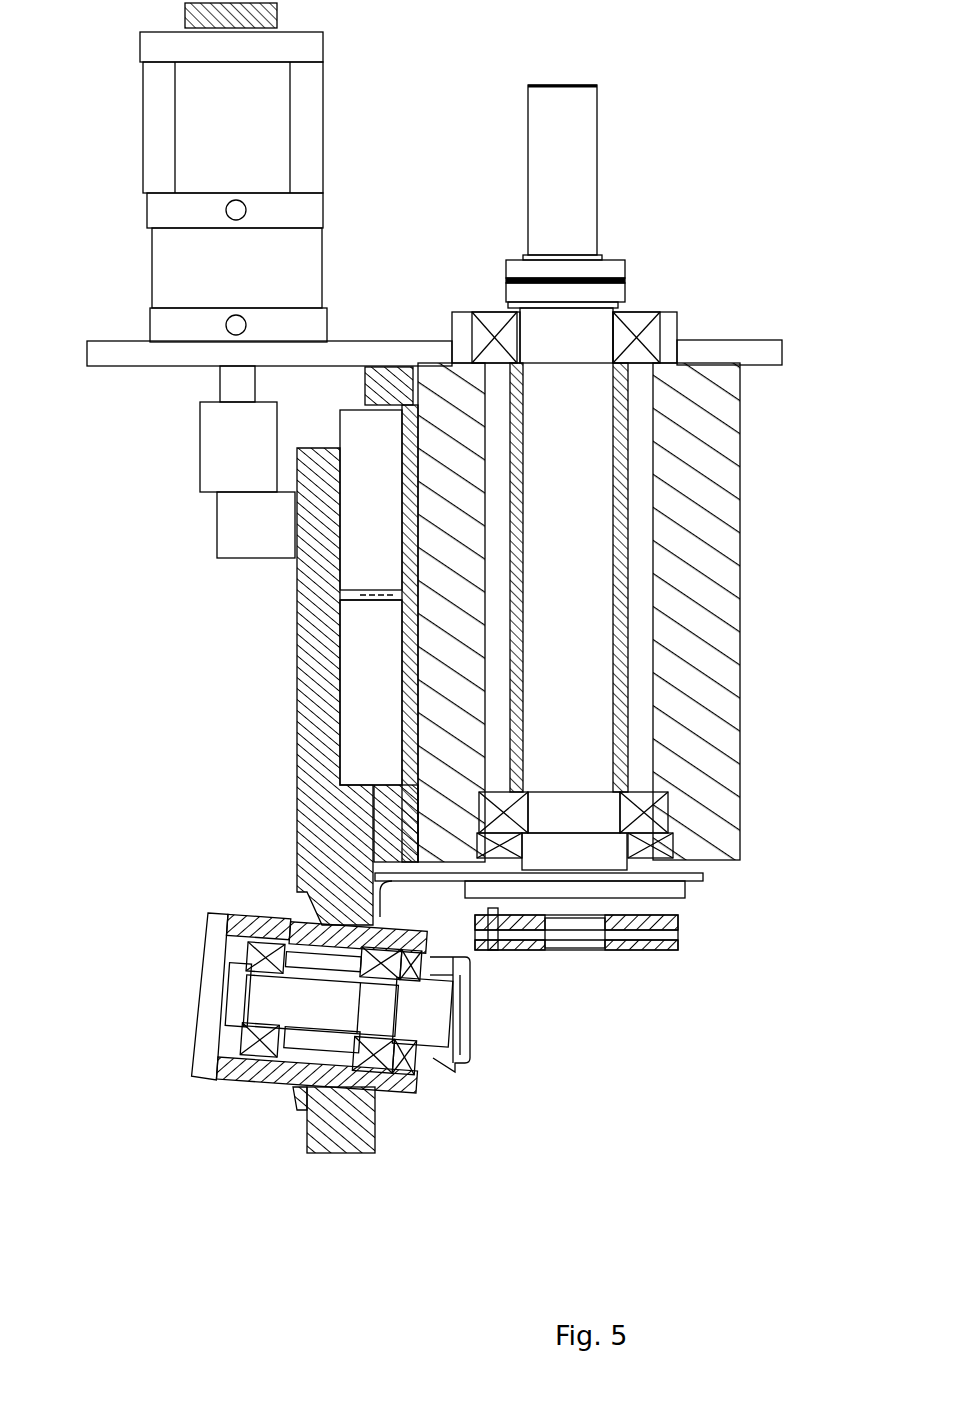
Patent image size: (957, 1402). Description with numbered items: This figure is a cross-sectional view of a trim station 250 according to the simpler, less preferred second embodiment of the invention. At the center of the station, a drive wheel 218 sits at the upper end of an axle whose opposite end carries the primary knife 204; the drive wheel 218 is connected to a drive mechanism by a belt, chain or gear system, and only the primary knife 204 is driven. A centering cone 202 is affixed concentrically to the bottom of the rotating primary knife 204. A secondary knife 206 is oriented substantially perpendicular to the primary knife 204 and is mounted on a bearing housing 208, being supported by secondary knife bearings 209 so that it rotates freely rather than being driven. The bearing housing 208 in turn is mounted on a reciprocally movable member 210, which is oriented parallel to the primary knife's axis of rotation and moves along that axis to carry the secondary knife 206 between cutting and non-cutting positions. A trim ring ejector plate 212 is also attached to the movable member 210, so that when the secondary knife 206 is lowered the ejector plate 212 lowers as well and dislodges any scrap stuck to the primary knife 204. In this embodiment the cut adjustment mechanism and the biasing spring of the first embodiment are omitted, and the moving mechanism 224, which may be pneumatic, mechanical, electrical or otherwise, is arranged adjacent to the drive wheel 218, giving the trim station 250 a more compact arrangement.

The moving mechanism 224 is at (135, 173).
The drive wheel 218 is at (524, 148).
The trim station 250 is at (814, 198).
The movable member 210 is at (297, 749).
The trim ring ejector plate 212 is at (697, 873).
The centering cone 202 is at (635, 955).
The primary knife 204 is at (677, 945).
The bearing housing 208 is at (253, 1082).
The secondary knife bearings 209 is at (388, 1090).
The secondary knife 206 is at (465, 1073).